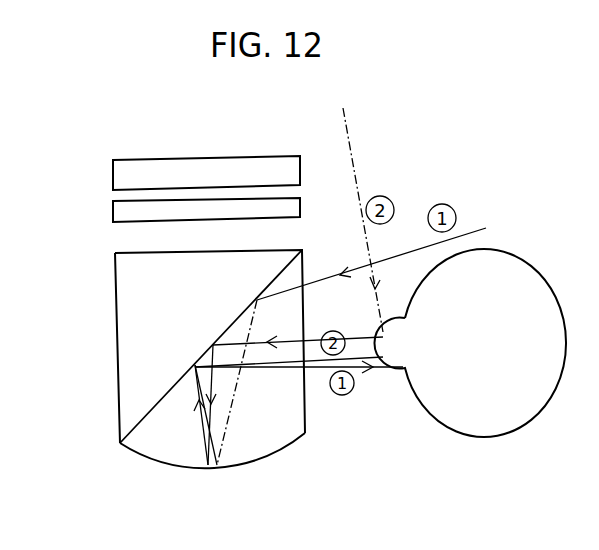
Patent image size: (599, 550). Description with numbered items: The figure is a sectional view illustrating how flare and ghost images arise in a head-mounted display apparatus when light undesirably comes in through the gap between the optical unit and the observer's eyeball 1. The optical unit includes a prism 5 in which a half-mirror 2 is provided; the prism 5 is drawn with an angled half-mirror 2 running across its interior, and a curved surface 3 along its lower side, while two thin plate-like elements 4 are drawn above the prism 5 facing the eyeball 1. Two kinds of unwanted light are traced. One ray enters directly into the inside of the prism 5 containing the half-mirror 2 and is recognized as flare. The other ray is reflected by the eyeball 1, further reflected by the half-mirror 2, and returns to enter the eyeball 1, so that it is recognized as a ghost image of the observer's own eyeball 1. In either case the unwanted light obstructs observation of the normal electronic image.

The eyeball 1 is at (495, 440).
The half-mirror 2 is at (138, 421).
The concave mirror 3 is at (263, 460).
The lens 4 is at (112, 212).
The prism 5 is at (115, 318).